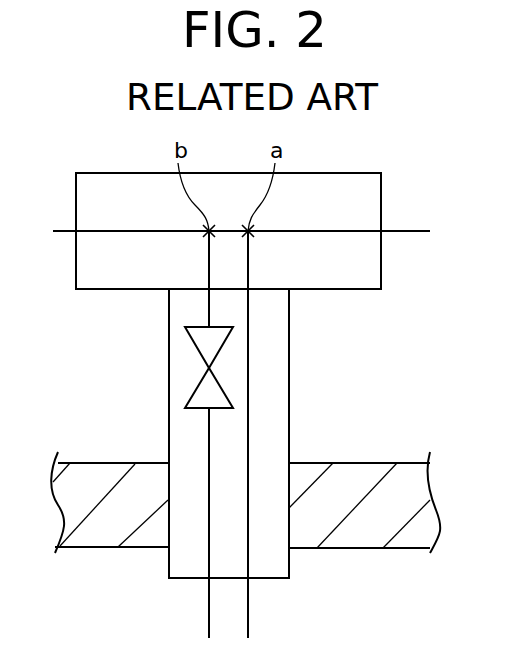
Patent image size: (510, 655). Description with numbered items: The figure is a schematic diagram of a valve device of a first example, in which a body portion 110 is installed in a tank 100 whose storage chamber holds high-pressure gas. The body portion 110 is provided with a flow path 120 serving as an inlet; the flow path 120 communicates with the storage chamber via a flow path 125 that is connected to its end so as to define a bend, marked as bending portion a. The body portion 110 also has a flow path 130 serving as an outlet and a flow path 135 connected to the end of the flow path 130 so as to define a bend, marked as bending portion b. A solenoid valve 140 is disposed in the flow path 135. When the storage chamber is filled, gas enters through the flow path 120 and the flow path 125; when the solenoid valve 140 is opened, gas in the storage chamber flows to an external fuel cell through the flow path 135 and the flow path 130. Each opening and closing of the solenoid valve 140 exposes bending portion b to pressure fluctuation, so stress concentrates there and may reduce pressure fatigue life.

The tank 100 is at (413, 463).
The body portion 110 is at (289, 383).
The flow path 120 is at (340, 233).
The flow path 125 is at (250, 340).
The flow path 130 is at (127, 233).
The flow path 135 is at (207, 313).
The solenoid valve 140 is at (207, 385).